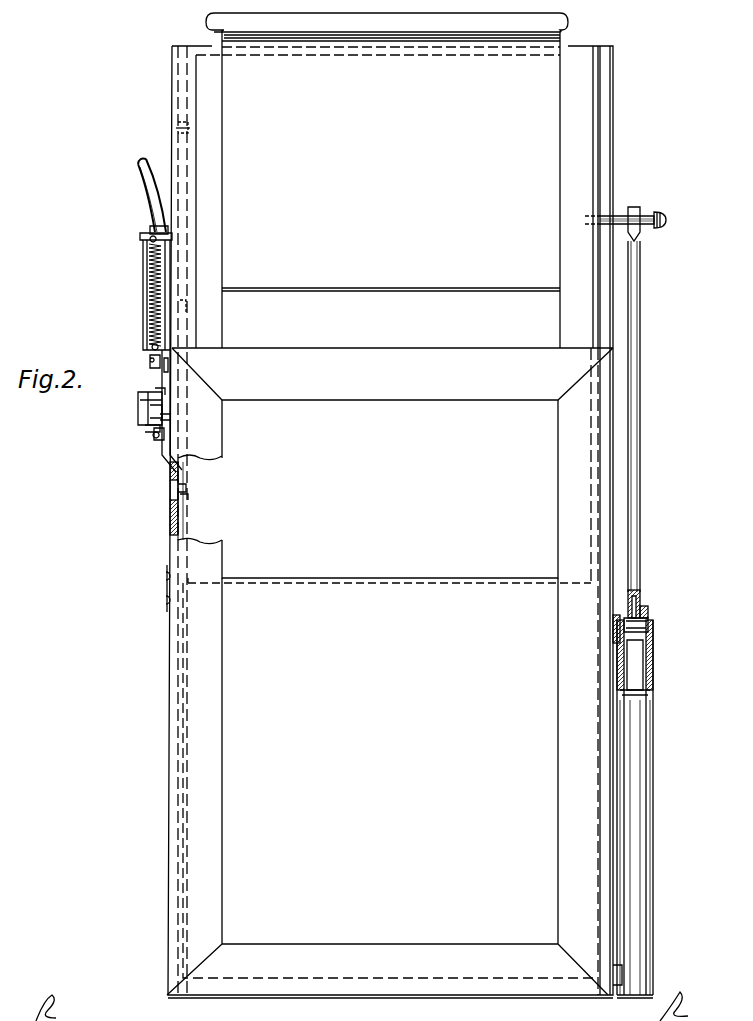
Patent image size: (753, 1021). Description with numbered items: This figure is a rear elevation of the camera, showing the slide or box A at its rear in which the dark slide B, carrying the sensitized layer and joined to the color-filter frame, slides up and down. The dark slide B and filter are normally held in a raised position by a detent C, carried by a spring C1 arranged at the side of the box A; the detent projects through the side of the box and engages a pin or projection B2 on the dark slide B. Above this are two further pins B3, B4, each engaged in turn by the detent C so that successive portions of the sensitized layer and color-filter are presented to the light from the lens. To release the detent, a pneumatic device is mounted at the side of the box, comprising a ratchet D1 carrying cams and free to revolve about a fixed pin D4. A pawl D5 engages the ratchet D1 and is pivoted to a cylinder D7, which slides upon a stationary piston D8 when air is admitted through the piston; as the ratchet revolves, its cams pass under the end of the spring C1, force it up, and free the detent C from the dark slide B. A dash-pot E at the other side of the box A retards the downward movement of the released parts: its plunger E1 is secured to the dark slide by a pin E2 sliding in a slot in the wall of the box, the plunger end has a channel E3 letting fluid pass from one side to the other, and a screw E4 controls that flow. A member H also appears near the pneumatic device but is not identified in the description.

The box A is at (195, 672).
The dark slide B is at (590, 125).
The pin B2 is at (188, 480).
The pin B3 is at (180, 305).
The pin B4 is at (185, 130).
The detent C is at (188, 493).
The spring C1 is at (174, 496).
The ratchet D1 is at (152, 436).
The fixed pin D4 is at (138, 412).
The pawl D5 is at (160, 378).
The cylinder D7 is at (152, 314).
The stationary piston D8 is at (140, 238).
The handle H is at (152, 200).
The dash-pot E is at (648, 782).
The plunger E1 is at (636, 386).
The pin E2 is at (613, 212).
The channel E3 is at (641, 612).
The screw E4 is at (648, 618).